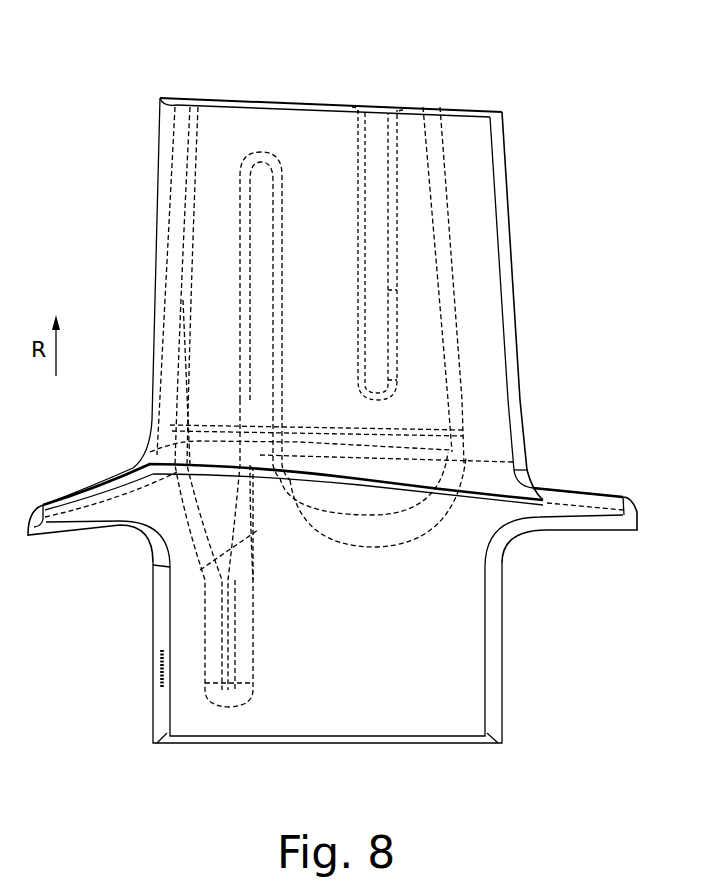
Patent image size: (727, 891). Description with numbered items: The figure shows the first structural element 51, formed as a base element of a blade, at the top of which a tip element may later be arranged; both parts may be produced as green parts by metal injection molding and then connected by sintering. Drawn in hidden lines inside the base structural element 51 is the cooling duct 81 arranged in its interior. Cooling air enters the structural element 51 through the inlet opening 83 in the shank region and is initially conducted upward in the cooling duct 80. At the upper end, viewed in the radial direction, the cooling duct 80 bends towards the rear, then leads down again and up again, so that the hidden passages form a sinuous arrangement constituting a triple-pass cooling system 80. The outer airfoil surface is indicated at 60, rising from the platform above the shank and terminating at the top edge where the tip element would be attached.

The first structural element 51 is at (532, 257).
The airfoil 60 is at (474, 106).
The cooling duct 80 is at (247, 97).
The cooling duct 81 is at (302, 131).
The inlet opening 83 is at (162, 667).